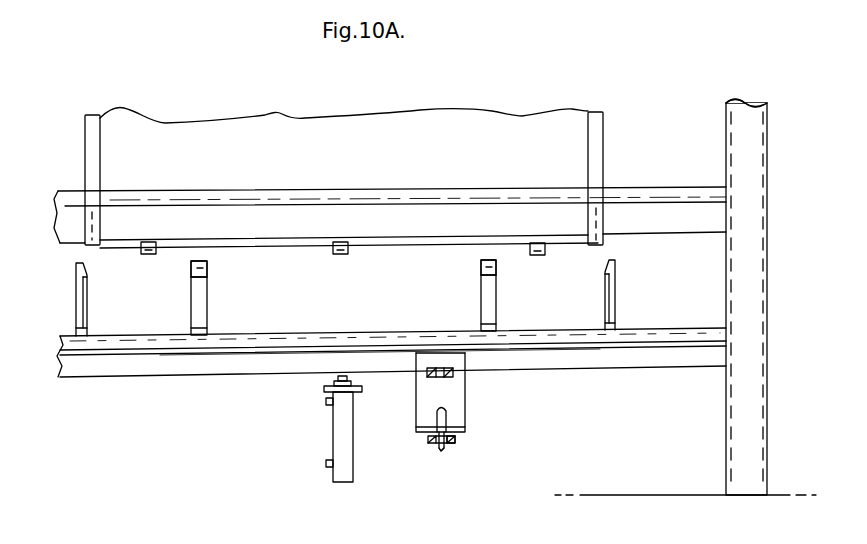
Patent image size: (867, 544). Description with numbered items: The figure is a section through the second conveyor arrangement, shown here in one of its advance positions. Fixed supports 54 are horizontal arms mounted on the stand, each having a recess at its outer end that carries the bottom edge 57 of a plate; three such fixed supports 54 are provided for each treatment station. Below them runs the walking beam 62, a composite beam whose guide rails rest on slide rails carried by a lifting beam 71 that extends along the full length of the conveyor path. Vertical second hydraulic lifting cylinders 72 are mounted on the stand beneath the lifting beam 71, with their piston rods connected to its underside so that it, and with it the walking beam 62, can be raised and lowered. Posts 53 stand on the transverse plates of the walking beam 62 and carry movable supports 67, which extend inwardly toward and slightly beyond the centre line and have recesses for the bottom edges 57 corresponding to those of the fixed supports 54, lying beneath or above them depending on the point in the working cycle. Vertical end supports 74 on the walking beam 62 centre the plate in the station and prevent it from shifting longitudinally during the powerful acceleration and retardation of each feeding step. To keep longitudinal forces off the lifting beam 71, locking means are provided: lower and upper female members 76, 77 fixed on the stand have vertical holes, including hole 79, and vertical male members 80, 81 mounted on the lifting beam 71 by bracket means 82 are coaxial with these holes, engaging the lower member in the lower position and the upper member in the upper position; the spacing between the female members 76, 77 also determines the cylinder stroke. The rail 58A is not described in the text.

The post 53 is at (207, 308).
The fixed support 54 is at (148, 255).
The bottom edge 57 is at (300, 250).
The rail 58A is at (654, 191).
The walking beam 62 is at (123, 340).
The movable support 67 is at (207, 268).
The lifting beam 71 is at (238, 365).
The second hydraulic lifting cylinder 72 is at (333, 432).
The vertical end support 74 is at (76, 305).
The lower female member 76 is at (454, 444).
The upper female member 77 is at (446, 368).
The hole 79 is at (440, 386).
The male member 80 is at (442, 451).
The male member 81 is at (444, 417).
The bracket means 82 is at (467, 401).